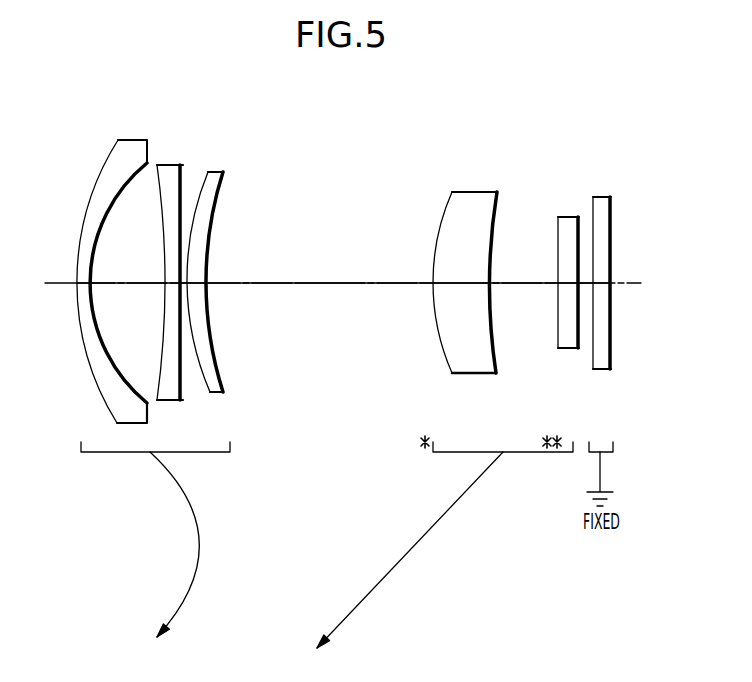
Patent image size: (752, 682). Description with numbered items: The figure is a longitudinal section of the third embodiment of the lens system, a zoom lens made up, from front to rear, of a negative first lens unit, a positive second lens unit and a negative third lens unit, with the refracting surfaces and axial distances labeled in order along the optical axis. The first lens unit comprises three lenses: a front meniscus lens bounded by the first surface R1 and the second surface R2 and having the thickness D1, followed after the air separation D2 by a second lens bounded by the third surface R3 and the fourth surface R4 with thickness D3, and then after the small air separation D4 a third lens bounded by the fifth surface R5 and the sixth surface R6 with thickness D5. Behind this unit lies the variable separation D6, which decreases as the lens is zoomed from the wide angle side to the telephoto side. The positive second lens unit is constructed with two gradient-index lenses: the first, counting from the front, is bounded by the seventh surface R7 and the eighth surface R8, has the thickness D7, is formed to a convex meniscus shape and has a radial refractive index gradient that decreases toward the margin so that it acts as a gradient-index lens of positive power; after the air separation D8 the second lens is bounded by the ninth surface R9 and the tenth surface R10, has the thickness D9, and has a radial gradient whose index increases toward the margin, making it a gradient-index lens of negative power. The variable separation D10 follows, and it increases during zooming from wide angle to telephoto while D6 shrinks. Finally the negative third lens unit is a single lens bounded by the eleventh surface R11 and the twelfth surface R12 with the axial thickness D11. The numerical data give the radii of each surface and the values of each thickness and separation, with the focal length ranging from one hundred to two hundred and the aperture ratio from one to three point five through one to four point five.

The first lens surface R1 is at (108, 162).
The second lens surface R2 is at (147, 168).
The third lens surface R3 is at (153, 181).
The fourth lens surface R4 is at (190, 181).
The fifth lens surface R5 is at (208, 175).
The sixth lens surface R6 is at (224, 176).
The seventh lens surface R7 is at (452, 205).
The eighth lens surface R8 is at (498, 192).
The ninth lens surface R9 is at (558, 218).
The tenth lens surface R10 is at (578, 214).
The eleventh lens surface R11 is at (592, 197).
The twelfth lens surface R12 is at (611, 203).
The axial thickness of first lens D1 is at (83, 283).
The axial air separation between first and second lenses D2 is at (138, 283).
The axial thickness of second lens D3 is at (176, 283).
The axial air separation between second and third lenses D4 is at (185, 283).
The axial thickness of third lens D5 is at (199, 283).
The variable separation between first and second lens units D6 is at (336, 283).
The axial thickness of first gradient-index lens D7 is at (467, 283).
The axial air separation within second lens unit D8 is at (528, 283).
The axial thickness of second gradient-index lens D9 is at (568, 283).
The variable separation between second and third lens units D10 is at (587, 283).
The axial thickness of third lens unit lens D11 is at (600, 283).